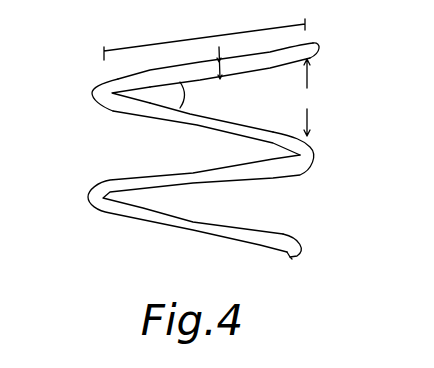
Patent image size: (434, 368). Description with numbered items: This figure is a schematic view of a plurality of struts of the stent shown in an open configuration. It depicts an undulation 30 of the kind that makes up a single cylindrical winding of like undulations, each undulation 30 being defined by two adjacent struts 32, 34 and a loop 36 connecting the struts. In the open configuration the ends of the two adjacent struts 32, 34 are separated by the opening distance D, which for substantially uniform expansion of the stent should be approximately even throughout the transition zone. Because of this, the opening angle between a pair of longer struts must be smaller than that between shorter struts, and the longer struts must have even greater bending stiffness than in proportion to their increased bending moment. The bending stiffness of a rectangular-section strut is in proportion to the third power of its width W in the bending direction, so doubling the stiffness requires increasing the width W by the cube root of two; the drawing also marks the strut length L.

The undulation 30 is at (72, 142).
The strut 32 is at (136, 77).
The strut 34 is at (136, 112).
The loop 36 is at (98, 95).
The leg length L is at (197, 38).
The width W is at (219, 66).
The opening distance D is at (308, 97).